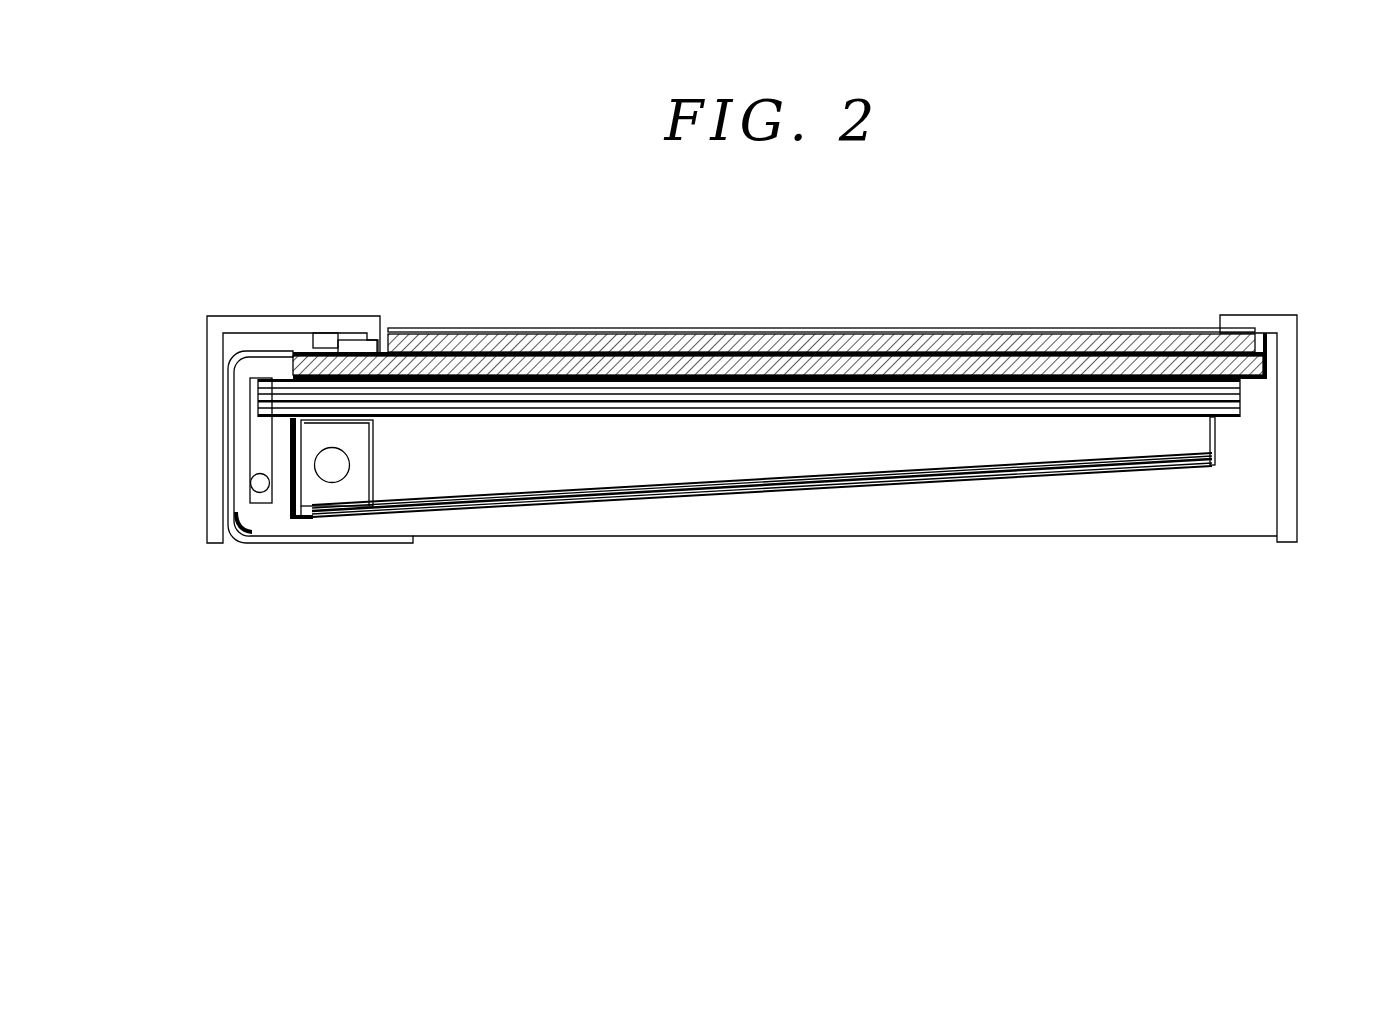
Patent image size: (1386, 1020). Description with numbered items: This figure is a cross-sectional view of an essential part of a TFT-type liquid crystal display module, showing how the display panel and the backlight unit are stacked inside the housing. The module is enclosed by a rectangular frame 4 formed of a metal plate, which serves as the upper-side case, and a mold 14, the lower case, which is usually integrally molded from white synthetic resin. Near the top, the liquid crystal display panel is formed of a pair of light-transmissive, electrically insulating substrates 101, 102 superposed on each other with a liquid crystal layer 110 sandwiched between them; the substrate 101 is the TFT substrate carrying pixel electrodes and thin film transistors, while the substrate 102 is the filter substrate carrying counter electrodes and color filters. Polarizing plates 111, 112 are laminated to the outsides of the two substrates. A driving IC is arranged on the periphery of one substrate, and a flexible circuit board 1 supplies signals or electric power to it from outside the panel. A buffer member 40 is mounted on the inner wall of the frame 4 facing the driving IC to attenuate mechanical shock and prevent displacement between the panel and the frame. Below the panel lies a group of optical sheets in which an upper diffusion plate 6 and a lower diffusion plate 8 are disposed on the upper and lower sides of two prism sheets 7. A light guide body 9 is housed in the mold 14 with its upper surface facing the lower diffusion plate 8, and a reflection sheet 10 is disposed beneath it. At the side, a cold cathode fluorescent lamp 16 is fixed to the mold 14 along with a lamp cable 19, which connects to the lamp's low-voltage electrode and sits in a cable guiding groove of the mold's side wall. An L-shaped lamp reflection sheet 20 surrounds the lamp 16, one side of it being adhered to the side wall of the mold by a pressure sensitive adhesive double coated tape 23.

The flexible circuit board 1 is at (267, 545).
The frame 4 is at (218, 328).
The upper diffusion plate 6 is at (1240, 382).
The prism sheets 7 is at (1232, 388).
The lower diffusion plate 8 is at (1240, 412).
The light guide body 9 is at (630, 473).
The reflection sheet 10 is at (797, 490).
The mold 14 is at (1115, 522).
The cold cathode fluorescent lamp 16 is at (335, 478).
The lamp cable 19 is at (260, 485).
The lamp reflection sheet 20 is at (300, 518).
The pressure sensitive adhesive double coated tape 23 is at (291, 470).
The buffer member 40 is at (330, 340).
The driving IC is at (366, 347).
The substrate 101 is at (1012, 337).
The substrate 102 is at (785, 338).
The liquid crystal layer 110 is at (905, 350).
The polarizing plate 111 is at (1118, 373).
The polarizing plate 112 is at (658, 328).